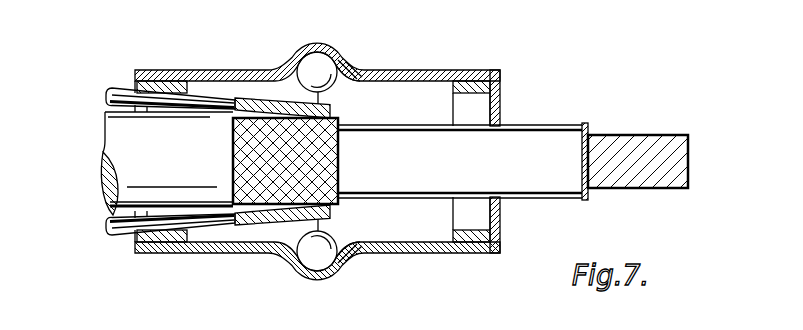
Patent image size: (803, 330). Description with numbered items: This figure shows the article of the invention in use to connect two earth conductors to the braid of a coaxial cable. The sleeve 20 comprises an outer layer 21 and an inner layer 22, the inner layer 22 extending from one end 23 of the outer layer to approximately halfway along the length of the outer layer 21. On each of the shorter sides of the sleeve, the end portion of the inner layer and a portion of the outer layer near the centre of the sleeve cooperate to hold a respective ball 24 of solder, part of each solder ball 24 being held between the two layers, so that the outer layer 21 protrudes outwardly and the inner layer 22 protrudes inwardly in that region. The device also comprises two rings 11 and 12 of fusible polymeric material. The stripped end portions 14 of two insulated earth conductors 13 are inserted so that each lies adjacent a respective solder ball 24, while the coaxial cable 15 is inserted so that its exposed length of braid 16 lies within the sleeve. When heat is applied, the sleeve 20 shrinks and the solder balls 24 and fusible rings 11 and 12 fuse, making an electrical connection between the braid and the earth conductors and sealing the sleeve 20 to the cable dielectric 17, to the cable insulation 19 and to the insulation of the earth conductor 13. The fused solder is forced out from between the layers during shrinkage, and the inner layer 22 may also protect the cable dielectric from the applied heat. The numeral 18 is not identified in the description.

The ring of fusible polymeric material 11 is at (160, 252).
The ring of fusible polymeric material 12 is at (478, 253).
The insulated earth conductor 13 is at (118, 90).
The stripped end portion 14 is at (255, 98).
The coaxial cable 15 is at (96, 131).
The braid 16 is at (460, 145).
The cable dielectric 17 is at (545, 173).
The rod 18 is at (633, 167).
The cable insulation 19 is at (140, 172).
The sleeve 20 is at (450, 66).
The outer layer 21 is at (352, 70).
The inner layer 22 is at (418, 253).
The end of the outer layer 23 is at (500, 80).
The ball of solder 24 is at (320, 64).